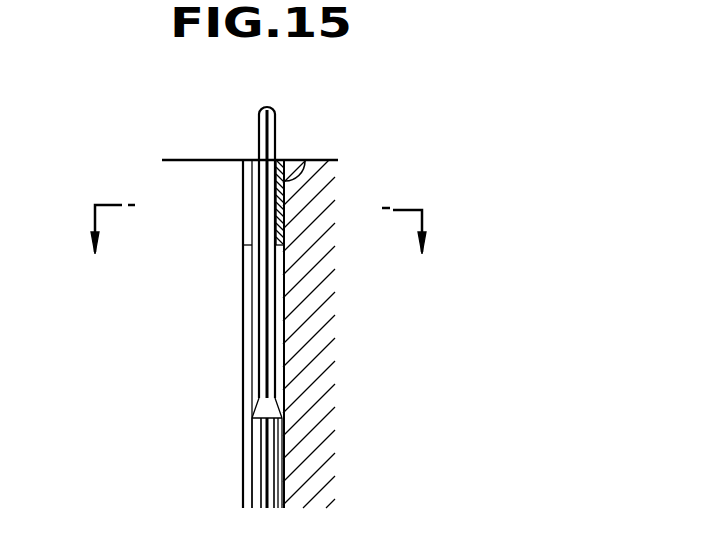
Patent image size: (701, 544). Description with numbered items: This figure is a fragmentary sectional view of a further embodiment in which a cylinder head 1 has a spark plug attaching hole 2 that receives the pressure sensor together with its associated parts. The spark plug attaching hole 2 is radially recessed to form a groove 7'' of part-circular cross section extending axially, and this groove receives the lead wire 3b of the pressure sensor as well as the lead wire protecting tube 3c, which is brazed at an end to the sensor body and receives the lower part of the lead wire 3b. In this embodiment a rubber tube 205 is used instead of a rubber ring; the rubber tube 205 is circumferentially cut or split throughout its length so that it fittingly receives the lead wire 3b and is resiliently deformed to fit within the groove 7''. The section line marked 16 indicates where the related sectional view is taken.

The cylinder head 1 is at (315, 332).
The spark plug attaching hole 2 is at (192, 179).
The rubber tube 205 is at (307, 159).
The groove 7'' is at (232, 334).
The lead wire 3b is at (262, 333).
The lead wire protecting tube 3c is at (251, 466).
The section line 16- 16 is at (252, 254).